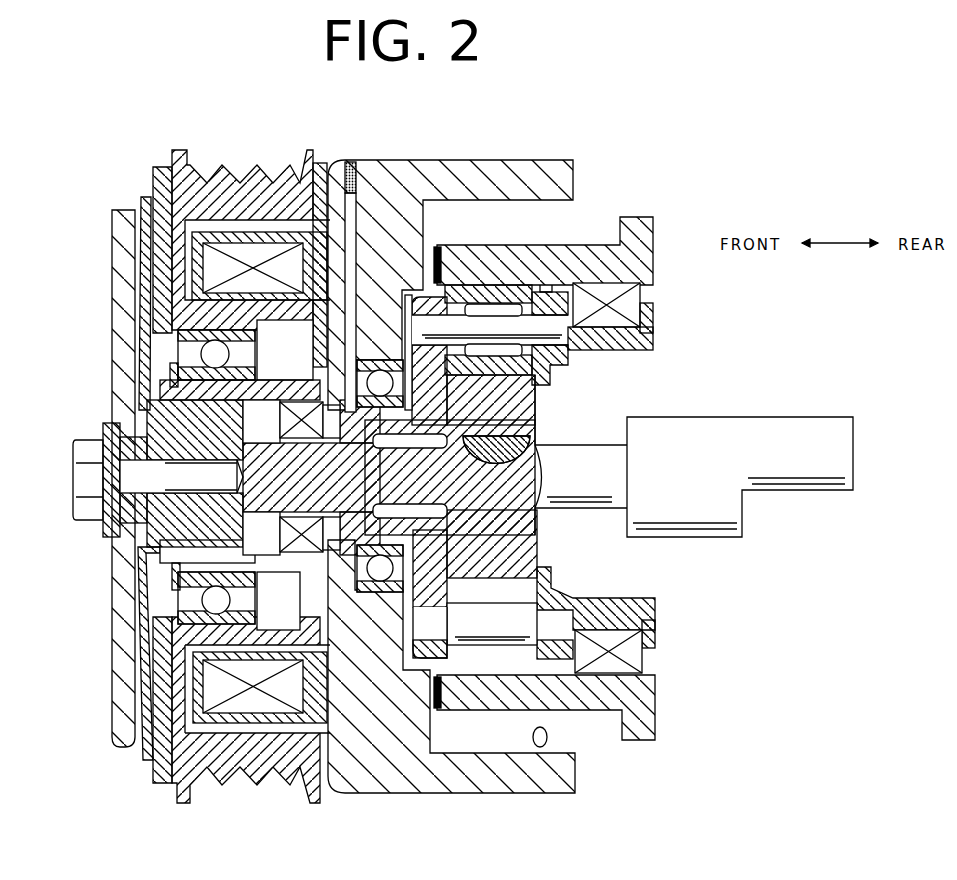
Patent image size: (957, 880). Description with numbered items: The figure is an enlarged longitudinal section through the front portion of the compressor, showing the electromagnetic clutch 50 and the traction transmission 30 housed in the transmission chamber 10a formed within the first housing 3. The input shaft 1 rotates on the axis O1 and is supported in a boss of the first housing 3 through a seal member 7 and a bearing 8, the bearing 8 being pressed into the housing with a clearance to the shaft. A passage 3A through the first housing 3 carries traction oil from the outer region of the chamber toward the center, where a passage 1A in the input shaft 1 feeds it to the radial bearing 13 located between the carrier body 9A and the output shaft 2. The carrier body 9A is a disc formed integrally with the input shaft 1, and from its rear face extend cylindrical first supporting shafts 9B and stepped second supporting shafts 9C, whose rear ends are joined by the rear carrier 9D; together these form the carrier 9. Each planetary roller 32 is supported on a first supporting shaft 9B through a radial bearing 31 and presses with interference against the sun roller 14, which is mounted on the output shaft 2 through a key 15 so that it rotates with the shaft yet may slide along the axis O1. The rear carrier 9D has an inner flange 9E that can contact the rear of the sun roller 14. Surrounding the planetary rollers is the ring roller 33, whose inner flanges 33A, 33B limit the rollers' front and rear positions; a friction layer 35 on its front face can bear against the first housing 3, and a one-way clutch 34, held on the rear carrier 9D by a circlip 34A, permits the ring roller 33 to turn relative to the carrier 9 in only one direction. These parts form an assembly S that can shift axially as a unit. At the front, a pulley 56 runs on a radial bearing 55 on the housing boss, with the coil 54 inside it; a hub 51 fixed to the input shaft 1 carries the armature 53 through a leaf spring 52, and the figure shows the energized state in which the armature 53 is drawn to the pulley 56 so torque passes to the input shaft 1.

The input shaft 1 is at (112, 535).
The passage 1A is at (307, 407).
The output shaft 2 is at (712, 420).
The first housing 3 is at (470, 793).
The passage 3A is at (372, 222).
The seal member 7 is at (282, 575).
The bearing 8 is at (380, 582).
The carrier 9 is at (658, 613).
The carrier body 9A is at (420, 300).
The first supporting shaft 9B is at (582, 351).
The second supporting shaft 9C is at (558, 617).
The rear carrier 9D is at (645, 352).
The flange 9E is at (540, 388).
The transmission chamber 10a is at (540, 747).
The radial bearing 13 is at (422, 535).
The sun roller 14 is at (540, 545).
The key 15 is at (532, 440).
The transmission 30 is at (612, 755).
The radial bearing 31 is at (484, 305).
The planetary roller 32 is at (548, 372).
The ring roller 33 is at (517, 268).
The flange 33A is at (444, 283).
The flange 33B is at (546, 287).
The one-way clutch 34 is at (640, 290).
The circlip 34A is at (652, 326).
The friction layer 35 is at (437, 262).
The electromagnetic clutch 50 is at (208, 475).
The hub 51 is at (112, 660).
The leaf spring 52 is at (140, 600).
The armature 53 is at (150, 770).
The coil 54 is at (240, 705).
The radial bearing 55 is at (200, 353).
The pulley 56 is at (238, 178).
The assembly S is at (574, 236).
The axis O1 is at (120, 477).